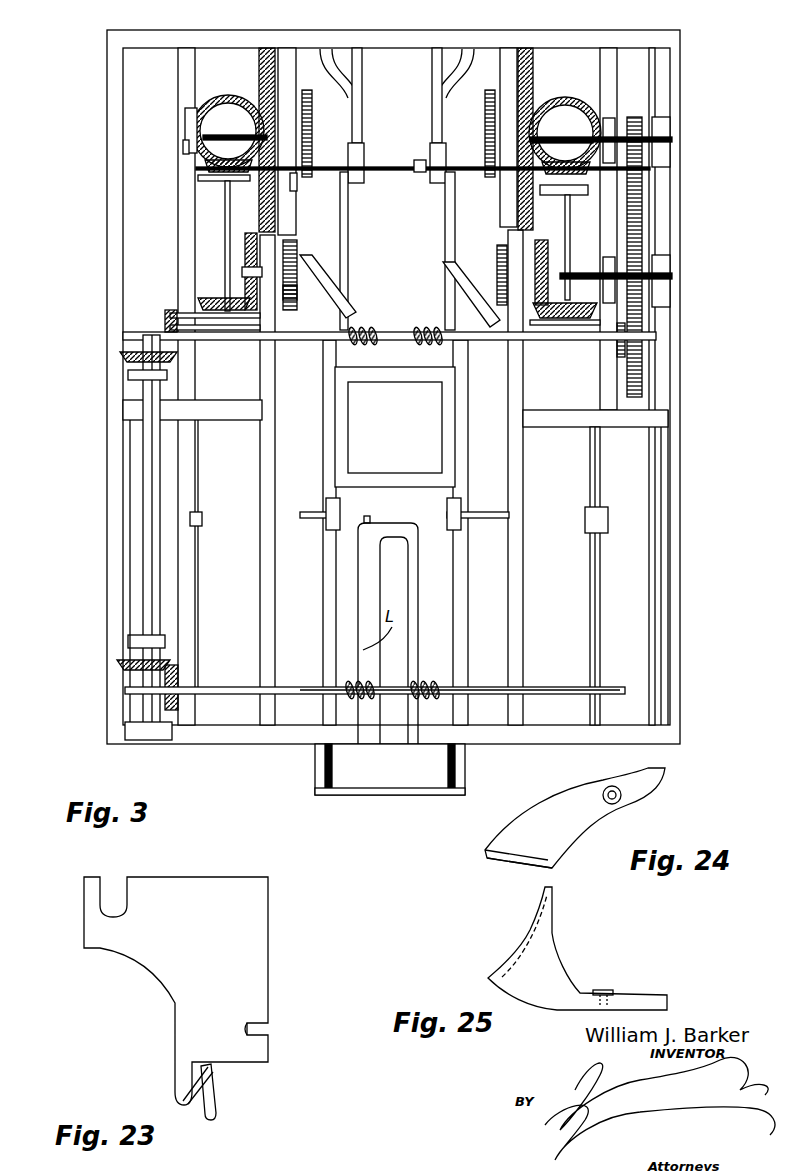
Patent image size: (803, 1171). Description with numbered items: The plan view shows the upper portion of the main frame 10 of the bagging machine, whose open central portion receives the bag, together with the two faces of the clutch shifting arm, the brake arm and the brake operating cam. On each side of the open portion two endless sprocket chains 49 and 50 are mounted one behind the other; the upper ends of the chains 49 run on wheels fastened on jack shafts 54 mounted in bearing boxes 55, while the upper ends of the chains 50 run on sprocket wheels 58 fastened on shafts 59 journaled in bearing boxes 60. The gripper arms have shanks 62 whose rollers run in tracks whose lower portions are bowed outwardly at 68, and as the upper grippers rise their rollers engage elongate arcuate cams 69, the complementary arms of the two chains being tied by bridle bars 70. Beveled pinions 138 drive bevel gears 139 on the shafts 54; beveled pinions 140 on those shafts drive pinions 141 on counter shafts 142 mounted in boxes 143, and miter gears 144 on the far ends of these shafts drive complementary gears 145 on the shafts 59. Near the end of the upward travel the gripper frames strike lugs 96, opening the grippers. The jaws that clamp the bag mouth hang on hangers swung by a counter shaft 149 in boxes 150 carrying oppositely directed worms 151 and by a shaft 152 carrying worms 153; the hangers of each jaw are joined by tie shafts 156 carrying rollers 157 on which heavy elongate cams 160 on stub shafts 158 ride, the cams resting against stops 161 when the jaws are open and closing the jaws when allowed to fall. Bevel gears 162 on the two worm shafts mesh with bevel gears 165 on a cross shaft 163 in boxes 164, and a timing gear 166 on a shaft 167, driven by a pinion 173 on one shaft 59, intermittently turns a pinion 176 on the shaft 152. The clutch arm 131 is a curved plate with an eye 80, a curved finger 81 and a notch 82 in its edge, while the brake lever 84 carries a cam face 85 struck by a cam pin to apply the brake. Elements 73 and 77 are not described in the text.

In FIG. 3, the main frame 10 is at (107, 77).
In FIG. 3, the endless sprocket chains 49 is at (312, 116).
In FIG. 3, the endless sprocket chains 50 is at (297, 290).
In FIG. 3, the jack shafts 54 is at (244, 126).
In FIG. 3, the bearing boxes 55 is at (185, 148).
In FIG. 3, the sprocket wheels 58 is at (297, 246).
In FIG. 3, the shafts 59 is at (672, 132).
In FIG. 3, the bearing boxes 60 is at (672, 160).
In FIG. 3, the shanks 62 is at (297, 180).
In FIG. 3, the outwardly bowed track portion 68 is at (345, 27).
In FIG. 3, the elongate arcuate cams 69 is at (432, 70).
In FIG. 3, the bridle bars 70 is at (348, 222).
In FIG. 3, the shaft 73 is at (430, 160).
In FIG. 3, the bracket 77 is at (418, 172).
In FIG. 23, the eye 80 is at (178, 1086).
In FIG. 23, the curved finger 81 is at (215, 1093).
In FIG. 23, the notch 82 is at (268, 1031).
In FIG. 24, the lever 84 is at (580, 820).
In FIG. 25, the lever 84 is at (568, 986).
In FIG. 24, the cam face 85 is at (485, 870).
In FIG. 25, the cam face 85 is at (530, 936).
In FIG. 3, the lugs 96 is at (393, 388).
In FIG. 23, the clutch arm 131 is at (270, 926).
In FIG. 3, the beveled pinions 138 is at (244, 95).
In FIG. 3, the bevel gears 139 is at (258, 60).
In FIG. 3, the beveled pinions 140 is at (185, 122).
In FIG. 3, the beveled pinions 141 is at (249, 160).
In FIG. 3, the counter shafts 142 is at (225, 232).
In FIG. 3, the boxes 143 is at (210, 180).
In FIG. 3, the miter gears 144 is at (205, 300).
In FIG. 3, the complementary gears 145 is at (245, 260).
In FIG. 3, the counter shaft 149 is at (232, 690).
In FIG. 3, the boxes 150 is at (290, 690).
In FIG. 3, the worms 151 is at (336, 697).
In FIG. 3, the shaft 152 is at (330, 345).
In FIG. 3, the worms 153 is at (420, 314).
In FIG. 3, the tie shafts 156 is at (322, 758).
In FIG. 3, the rollers 157 is at (325, 512).
In FIG. 3, the stub shafts 158 is at (200, 582).
In FIG. 3, the elongate cams 160 is at (237, 520).
In FIG. 3, the stops 161 is at (128, 520).
In FIG. 3, the bevel gears 162 is at (170, 318).
In FIG. 3, the cross shaft 163 is at (148, 606).
In FIG. 3, the boxes 164 is at (128, 640).
In FIG. 3, the bevel gears 165 is at (125, 356).
In FIG. 3, the timing gear 166 is at (645, 250).
In FIG. 3, the shaft 167 is at (672, 276).
In FIG. 3, the pinion 173 is at (650, 122).
In FIG. 3, the pinion 176 is at (616, 358).